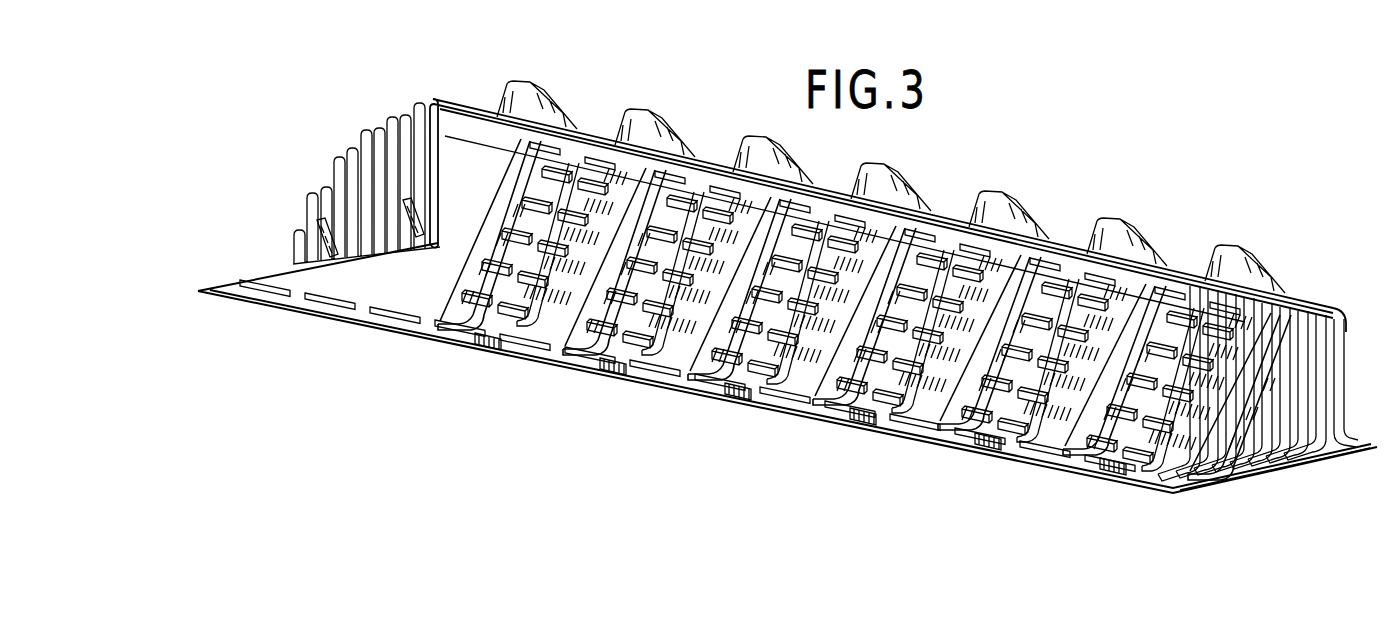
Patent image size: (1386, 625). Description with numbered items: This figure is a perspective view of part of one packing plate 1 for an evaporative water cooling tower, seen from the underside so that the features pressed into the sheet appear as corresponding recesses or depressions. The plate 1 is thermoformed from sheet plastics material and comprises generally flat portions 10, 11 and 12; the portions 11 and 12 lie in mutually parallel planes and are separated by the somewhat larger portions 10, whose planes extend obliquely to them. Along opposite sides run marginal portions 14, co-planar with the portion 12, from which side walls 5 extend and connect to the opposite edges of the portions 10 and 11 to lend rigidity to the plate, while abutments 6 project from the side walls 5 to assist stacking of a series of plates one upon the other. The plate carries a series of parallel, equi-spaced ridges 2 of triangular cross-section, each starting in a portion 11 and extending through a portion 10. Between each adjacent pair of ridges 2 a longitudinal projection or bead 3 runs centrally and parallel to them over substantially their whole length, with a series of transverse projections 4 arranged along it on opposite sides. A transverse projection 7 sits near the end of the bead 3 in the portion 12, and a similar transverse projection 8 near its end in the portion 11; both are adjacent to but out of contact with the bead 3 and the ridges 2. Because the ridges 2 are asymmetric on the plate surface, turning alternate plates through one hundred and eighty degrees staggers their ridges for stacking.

The plate 1 is at (838, 194).
The ridges 2 is at (640, 125).
The projection or bead 3 is at (737, 357).
The transverse projections 4 is at (997, 383).
The side walls 5 is at (393, 175).
The abutments 6 is at (317, 223).
The transverse projection 7 is at (545, 352).
The transverse projection 8 is at (707, 173).
The oblique flat portion 10 is at (953, 287).
The flat portion 11 is at (880, 227).
The flat portion 12 is at (236, 285).
The marginal portions 14 is at (1307, 463).